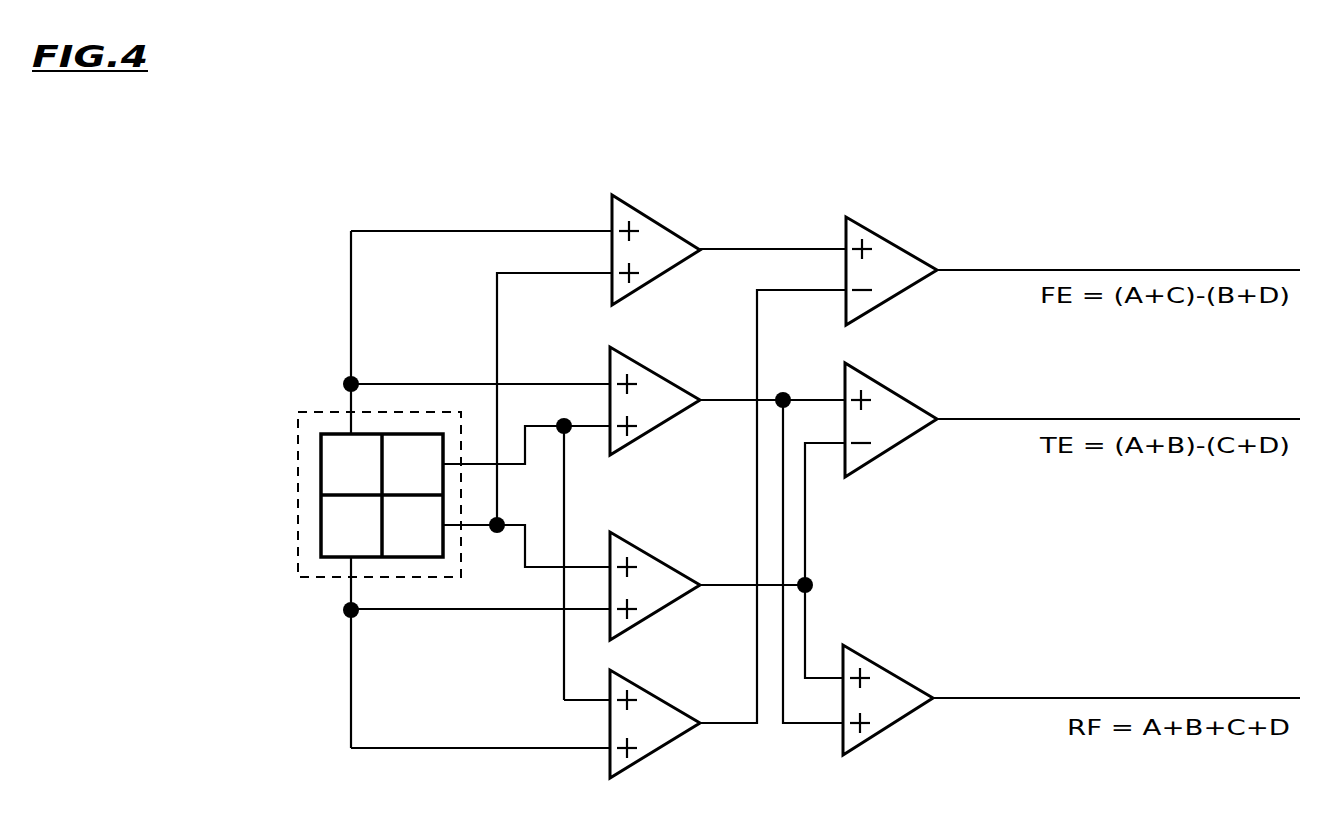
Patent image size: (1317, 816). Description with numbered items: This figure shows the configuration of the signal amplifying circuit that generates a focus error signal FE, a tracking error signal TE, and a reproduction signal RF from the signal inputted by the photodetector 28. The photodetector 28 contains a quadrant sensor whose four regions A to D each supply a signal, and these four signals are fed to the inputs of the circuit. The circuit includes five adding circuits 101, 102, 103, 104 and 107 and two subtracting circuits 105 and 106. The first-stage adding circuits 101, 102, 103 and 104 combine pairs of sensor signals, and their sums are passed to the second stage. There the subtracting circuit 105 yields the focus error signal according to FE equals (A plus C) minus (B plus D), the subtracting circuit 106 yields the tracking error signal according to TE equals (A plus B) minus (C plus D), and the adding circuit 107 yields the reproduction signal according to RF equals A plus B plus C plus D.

The photodetector 28 is at (322, 408).
The adding circuit 101 is at (652, 226).
The adding circuit 102 is at (652, 374).
The adding circuit 103 is at (652, 558).
The adding circuit 104 is at (650, 704).
The subtracting circuit 105 is at (888, 245).
The subtracting circuit 106 is at (887, 391).
The adding circuit 107 is at (886, 669).